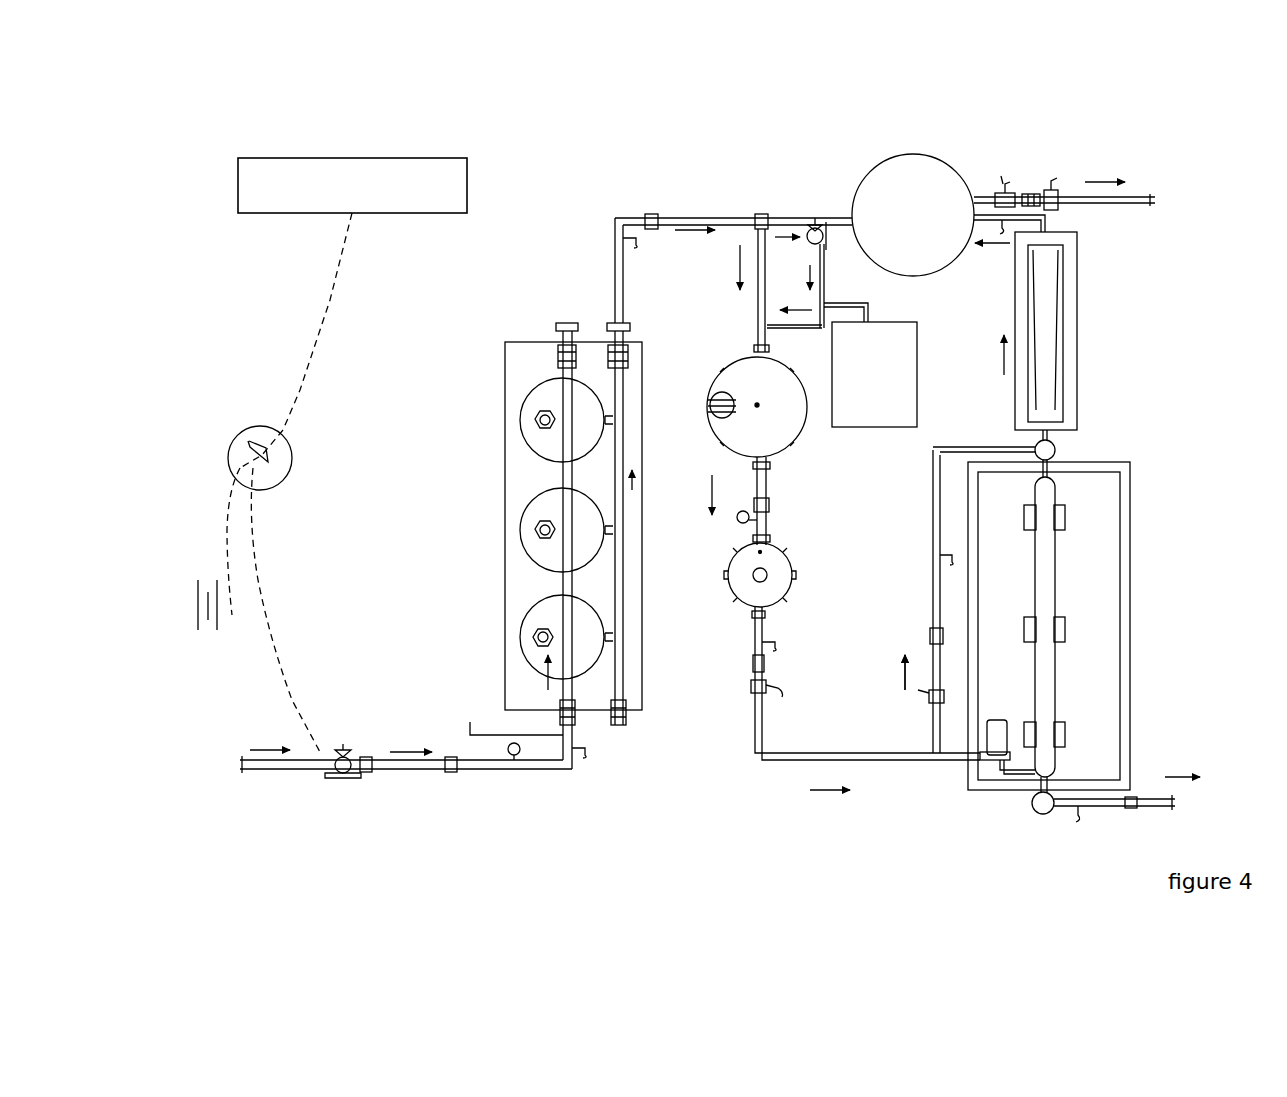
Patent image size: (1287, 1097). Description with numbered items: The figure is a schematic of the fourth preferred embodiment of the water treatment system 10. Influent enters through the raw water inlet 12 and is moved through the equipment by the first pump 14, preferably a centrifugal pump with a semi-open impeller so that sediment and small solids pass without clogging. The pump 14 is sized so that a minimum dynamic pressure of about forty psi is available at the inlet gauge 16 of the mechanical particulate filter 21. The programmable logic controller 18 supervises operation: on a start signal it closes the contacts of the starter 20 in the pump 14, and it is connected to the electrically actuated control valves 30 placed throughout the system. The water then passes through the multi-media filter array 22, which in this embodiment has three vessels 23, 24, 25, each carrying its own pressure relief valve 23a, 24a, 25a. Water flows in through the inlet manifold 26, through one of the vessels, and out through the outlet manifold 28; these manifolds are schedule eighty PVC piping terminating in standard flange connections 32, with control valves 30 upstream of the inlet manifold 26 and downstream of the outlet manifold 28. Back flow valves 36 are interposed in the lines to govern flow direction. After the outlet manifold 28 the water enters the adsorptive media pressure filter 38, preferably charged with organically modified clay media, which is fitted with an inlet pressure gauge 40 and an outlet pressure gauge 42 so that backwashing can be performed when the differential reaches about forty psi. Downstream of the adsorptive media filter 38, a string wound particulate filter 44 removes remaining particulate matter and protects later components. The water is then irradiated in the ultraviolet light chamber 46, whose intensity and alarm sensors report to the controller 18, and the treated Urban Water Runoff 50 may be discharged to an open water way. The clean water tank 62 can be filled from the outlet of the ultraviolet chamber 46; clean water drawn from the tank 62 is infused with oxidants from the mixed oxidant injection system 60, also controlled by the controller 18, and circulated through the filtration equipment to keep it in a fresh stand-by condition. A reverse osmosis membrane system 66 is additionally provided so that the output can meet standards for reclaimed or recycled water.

The system 10 is at (736, 84).
The raw water inlet 12 is at (240, 760).
The first pump 14 is at (343, 757).
The inlet gauge 16 is at (510, 718).
The programmable logic controller 18 is at (354, 158).
The starter 20 is at (290, 472).
The mechanical particulate filter 21 is at (505, 548).
The multi-media filter array 22 is at (520, 414).
The pressure vessel 23 is at (520, 637).
The pressure relief valve 23a is at (532, 640).
The vessel 24 is at (520, 521).
The pressure relief valve 24a is at (536, 530).
The pressure vessel 25 is at (522, 426).
The pressure relief valve 25a is at (538, 418).
The inlet manifold 26 is at (558, 378).
The outlet manifold 28 is at (623, 390).
The control valves 30 is at (560, 348).
The flange connections 32 is at (568, 322).
The back flow valves 36 is at (653, 215).
The adsorptive media pressure filter 38 is at (715, 438).
The inlet pressure gauge 40 is at (758, 322).
The outlet pressure gauge 42 is at (737, 522).
The string wound particulate filter 44 is at (795, 577).
The ultraviolet light chamber 46 is at (1077, 339).
The treated Urban Water Runoff 50 is at (1155, 200).
The mixed oxidant injection system 60 is at (917, 375).
The clean water tank 62 is at (958, 178).
The reverse osmosis membrane system 66 is at (1130, 668).